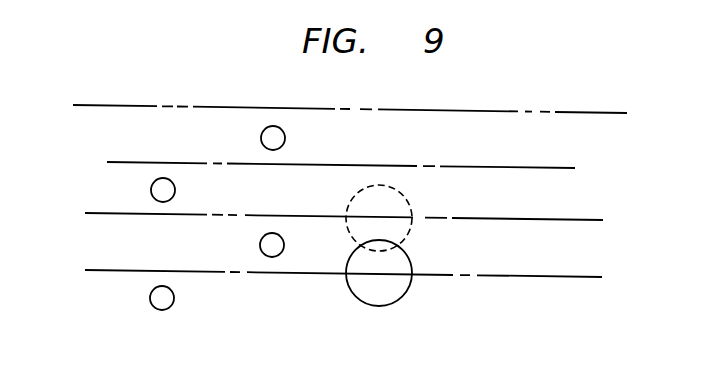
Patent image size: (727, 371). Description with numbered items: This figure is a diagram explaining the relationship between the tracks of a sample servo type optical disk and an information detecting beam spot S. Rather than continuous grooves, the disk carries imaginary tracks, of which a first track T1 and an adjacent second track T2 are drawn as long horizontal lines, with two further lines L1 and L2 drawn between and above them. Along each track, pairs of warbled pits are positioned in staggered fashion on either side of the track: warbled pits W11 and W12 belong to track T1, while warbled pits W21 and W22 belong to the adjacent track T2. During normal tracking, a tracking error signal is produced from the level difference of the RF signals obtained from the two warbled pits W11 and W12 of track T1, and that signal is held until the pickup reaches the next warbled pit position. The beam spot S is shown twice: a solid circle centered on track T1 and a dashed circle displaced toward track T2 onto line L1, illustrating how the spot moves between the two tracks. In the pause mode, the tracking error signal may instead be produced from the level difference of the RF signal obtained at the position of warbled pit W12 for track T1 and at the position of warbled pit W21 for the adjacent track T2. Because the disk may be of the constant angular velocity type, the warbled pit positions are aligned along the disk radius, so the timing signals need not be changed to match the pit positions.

The first loop line L1 is at (359, 222).
The second loop line L2 is at (363, 116).
The track T1 is at (357, 279).
The adjacent track T2 is at (354, 169).
The warbled pit W11 is at (182, 302).
The warbled pit W12 is at (292, 248).
The warbled pit W21 is at (184, 193).
The warbled pit W22 is at (293, 140).
The information detecting beam spot S is at (409, 199).